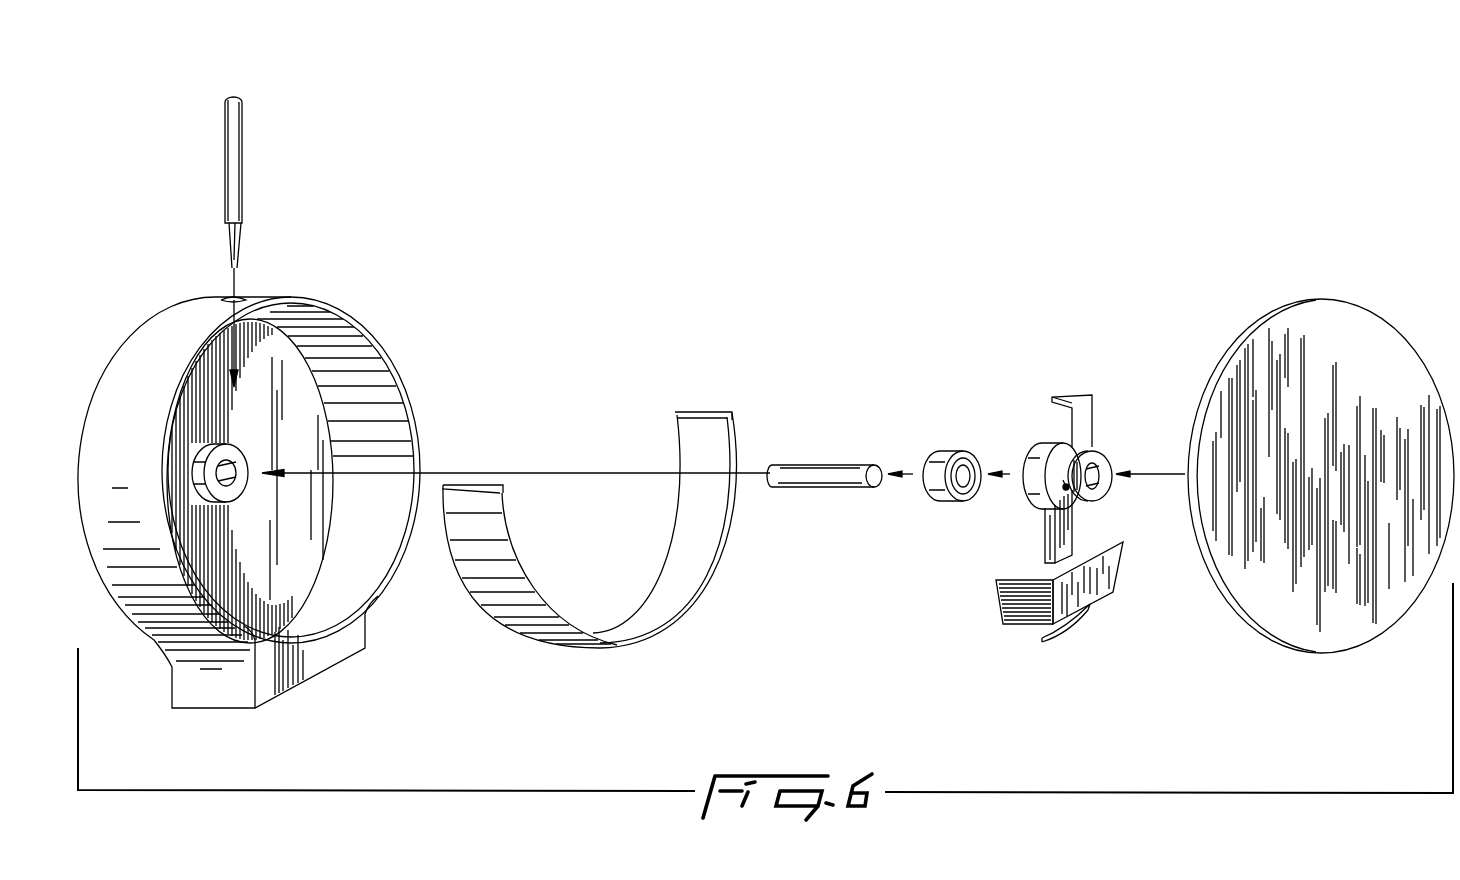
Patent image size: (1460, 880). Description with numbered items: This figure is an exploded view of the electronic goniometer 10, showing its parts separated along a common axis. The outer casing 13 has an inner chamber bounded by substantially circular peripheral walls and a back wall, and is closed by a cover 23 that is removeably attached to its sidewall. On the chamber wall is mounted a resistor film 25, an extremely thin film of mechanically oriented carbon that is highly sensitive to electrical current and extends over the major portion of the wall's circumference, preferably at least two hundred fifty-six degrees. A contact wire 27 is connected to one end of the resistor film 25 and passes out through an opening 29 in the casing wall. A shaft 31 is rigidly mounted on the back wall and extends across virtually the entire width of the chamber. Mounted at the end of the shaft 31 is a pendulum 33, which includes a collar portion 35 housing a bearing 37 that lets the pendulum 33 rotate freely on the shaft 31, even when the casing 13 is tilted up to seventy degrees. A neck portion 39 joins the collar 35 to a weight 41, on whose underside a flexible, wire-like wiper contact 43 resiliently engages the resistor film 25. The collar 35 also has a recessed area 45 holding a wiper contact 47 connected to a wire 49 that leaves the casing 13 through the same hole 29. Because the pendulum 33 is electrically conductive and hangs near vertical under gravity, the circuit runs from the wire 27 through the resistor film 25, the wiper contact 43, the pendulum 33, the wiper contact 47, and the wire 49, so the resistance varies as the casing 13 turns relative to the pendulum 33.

The electronic goniometer 10 is at (895, 202).
The outer casing 13 is at (390, 335).
The cover 23 is at (1325, 340).
The resistor film 25 is at (562, 647).
The contact wire 27 is at (240, 255).
The opening 29 is at (245, 297).
The shaft 31 is at (823, 462).
The pendulum 33 is at (1115, 440).
The collar portion 35 is at (1027, 495).
The bearing 37 is at (938, 500).
The neck portion 39 is at (1070, 530).
The weight 41 is at (1097, 582).
The wiper contact 43 is at (1065, 634).
The recessed area 45 is at (1065, 488).
The wiper contact 47 is at (1082, 392).
The wire 49 is at (232, 253).